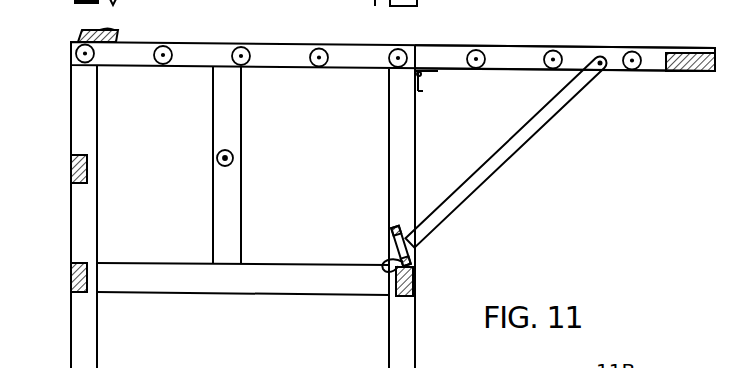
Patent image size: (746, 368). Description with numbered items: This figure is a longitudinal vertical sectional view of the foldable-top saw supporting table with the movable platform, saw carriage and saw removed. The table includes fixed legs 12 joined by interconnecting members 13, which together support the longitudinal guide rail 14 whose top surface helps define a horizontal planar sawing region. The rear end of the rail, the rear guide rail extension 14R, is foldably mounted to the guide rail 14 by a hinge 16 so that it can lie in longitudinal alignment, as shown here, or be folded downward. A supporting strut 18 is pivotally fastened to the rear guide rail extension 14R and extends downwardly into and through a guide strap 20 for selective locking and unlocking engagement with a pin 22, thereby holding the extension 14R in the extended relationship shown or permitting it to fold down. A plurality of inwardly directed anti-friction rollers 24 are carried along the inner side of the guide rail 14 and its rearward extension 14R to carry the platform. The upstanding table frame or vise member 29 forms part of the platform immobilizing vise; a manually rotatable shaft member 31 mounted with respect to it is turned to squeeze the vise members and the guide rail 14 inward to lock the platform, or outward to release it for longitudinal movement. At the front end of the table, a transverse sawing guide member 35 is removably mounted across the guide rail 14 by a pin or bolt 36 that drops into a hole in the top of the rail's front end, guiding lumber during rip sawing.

The fixed leg 12 is at (85, 343).
The interconnecting member 13 is at (270, 281).
The guide rail 14 is at (367, 51).
The rear guide rail extension 14R is at (533, 52).
The hinge 16 is at (425, 78).
The supporting strut 18 is at (528, 137).
The guide strap 20 is at (414, 226).
The pin 22 is at (413, 265).
The anti-friction roller 24 is at (477, 50).
The upstanding table frame (vise) member 29 is at (222, 118).
The manually rotatable shaft member 31 is at (233, 160).
The transverse sawing guide member 35 is at (110, 33).
The pin or bolt 36 is at (94, 30).